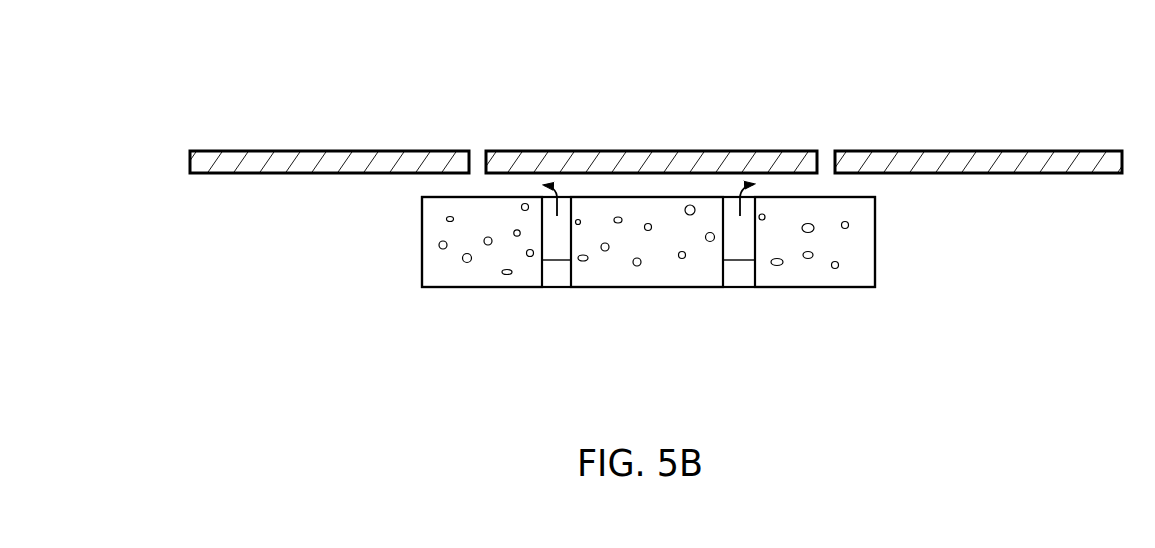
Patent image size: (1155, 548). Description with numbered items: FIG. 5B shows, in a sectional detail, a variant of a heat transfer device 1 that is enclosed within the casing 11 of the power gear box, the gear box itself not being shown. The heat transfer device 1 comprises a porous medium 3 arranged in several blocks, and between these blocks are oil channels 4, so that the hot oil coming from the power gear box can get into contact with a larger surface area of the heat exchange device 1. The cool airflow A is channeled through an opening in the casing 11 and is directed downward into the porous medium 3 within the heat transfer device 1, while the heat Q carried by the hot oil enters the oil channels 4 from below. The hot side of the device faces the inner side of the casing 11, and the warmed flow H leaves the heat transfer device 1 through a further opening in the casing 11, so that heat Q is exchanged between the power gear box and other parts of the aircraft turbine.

The heat transfer device 1 is at (846, 243).
The porous medium 3 is at (442, 272).
The oil channels 4 is at (648, 235).
The casing 11 is at (969, 168).
The airflow A is at (477, 222).
The heat flow H is at (825, 212).
The heat Q is at (556, 270).